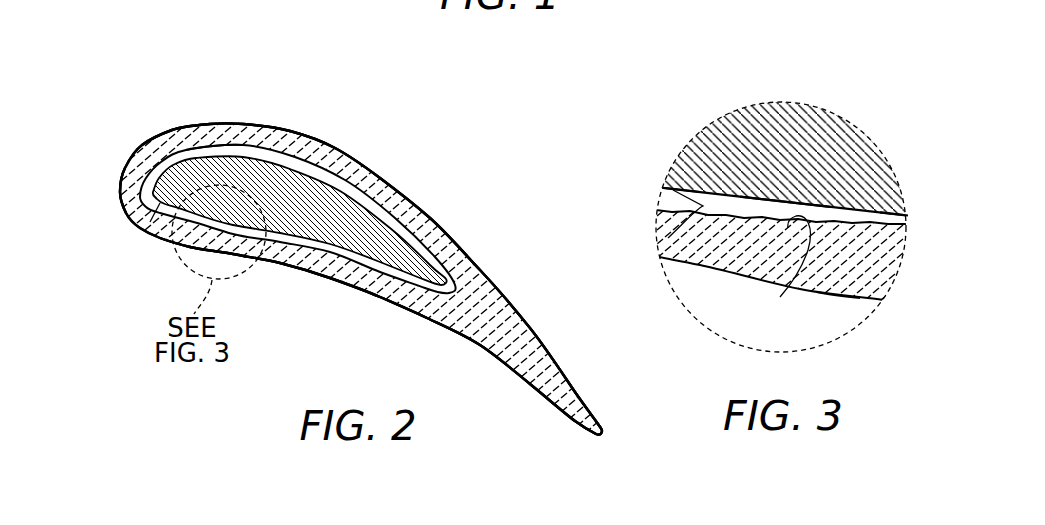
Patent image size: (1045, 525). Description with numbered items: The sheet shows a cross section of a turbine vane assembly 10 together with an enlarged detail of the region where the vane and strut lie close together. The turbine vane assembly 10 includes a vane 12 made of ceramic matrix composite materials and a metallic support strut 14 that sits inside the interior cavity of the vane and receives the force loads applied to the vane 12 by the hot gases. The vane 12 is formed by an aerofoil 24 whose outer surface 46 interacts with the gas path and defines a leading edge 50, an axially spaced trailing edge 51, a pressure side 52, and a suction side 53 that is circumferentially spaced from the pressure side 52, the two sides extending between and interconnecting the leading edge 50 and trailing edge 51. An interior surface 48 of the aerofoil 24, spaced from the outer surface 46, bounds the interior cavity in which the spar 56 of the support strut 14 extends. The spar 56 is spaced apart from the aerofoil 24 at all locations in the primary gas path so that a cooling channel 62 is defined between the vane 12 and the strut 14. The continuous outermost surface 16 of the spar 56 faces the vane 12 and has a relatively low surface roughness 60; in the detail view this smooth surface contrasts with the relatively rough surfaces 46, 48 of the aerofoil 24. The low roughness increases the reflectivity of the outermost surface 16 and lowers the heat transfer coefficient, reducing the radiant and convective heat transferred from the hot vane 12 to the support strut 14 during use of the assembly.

In FIG. 2, the turbine vane assembly 10 is at (125, 90).
In FIG. 2, the vane 12 is at (253, 116).
In FIG. 3, the vane 12 is at (814, 300).
In FIG. 2, the support strut 14 is at (242, 170).
In FIG. 3, the support strut 14 is at (745, 126).
In FIG. 2, the outermost surface 16 is at (138, 201).
In FIG. 3, the outermost surface 16 is at (664, 204).
In FIG. 2, the aerofoil 24 is at (404, 185).
In FIG. 3, the aerofoil 24 is at (697, 273).
In FIG. 3, the outer surface 46 is at (835, 297).
In FIG. 3, the interior surface 48 is at (780, 297).
In FIG. 2, the leading edge 50 is at (117, 179).
In FIG. 2, the trailing edge 51 is at (604, 436).
In FIG. 2, the pressure side 52 is at (374, 296).
In FIG. 2, the suction side 53 is at (327, 142).
In FIG. 2, the spar 56 is at (207, 147).
In FIG. 3, the spar 56 is at (825, 126).
In FIG. 2, the surface roughness 60 is at (160, 203).
In FIG. 3, the surface roughness 60 is at (668, 238).
In FIG. 3, the cooling channel 62 is at (896, 221).